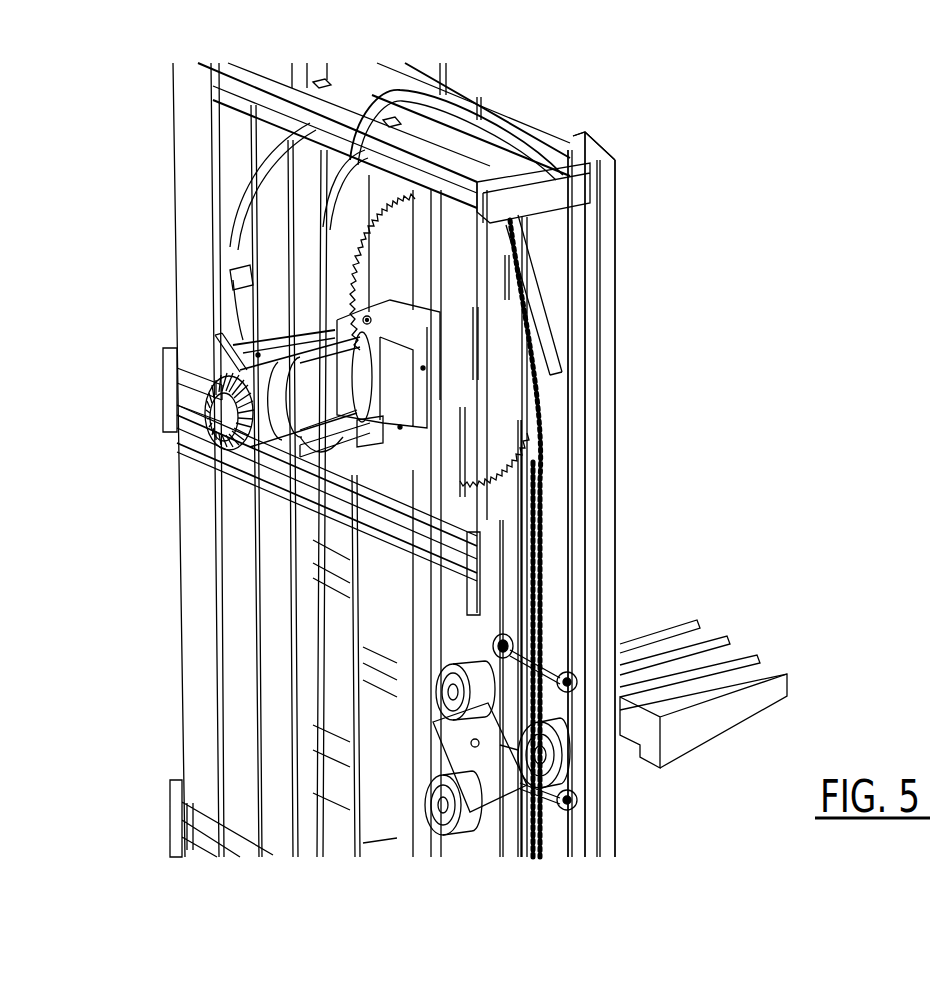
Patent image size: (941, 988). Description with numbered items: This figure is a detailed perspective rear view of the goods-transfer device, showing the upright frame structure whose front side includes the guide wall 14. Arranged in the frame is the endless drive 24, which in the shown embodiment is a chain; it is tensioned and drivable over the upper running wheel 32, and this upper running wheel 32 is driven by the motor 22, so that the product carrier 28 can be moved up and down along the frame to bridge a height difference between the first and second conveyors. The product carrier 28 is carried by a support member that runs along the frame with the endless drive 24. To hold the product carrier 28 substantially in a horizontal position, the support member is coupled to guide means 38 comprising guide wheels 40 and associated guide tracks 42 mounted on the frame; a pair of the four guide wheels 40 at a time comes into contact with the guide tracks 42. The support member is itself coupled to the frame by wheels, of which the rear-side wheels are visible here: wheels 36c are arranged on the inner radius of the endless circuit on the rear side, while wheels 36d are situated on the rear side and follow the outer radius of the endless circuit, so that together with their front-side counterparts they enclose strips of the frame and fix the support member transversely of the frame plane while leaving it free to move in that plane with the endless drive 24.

The guide wall 14 is at (560, 300).
The motor 22 is at (218, 432).
The endless drive 24 is at (543, 443).
The product carrier 28 is at (770, 638).
The upper running wheel 32 is at (407, 288).
The wheels 36c is at (492, 641).
The wheels 36d is at (573, 668).
The guide means 38 is at (423, 695).
The guide wheels 40 is at (427, 775).
The guide tracks 42 is at (213, 262).